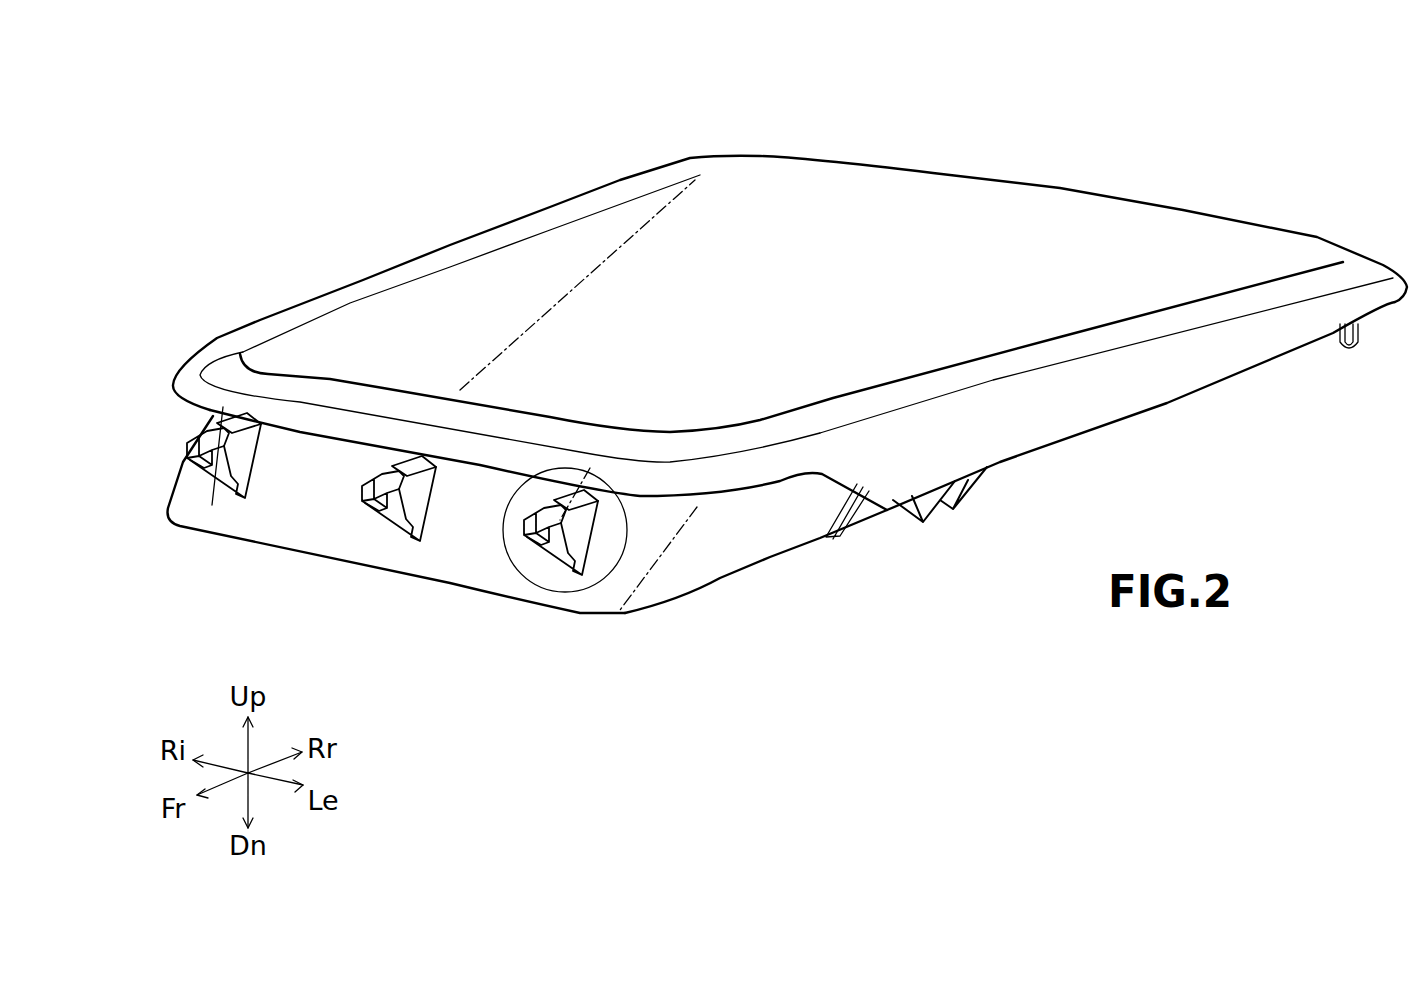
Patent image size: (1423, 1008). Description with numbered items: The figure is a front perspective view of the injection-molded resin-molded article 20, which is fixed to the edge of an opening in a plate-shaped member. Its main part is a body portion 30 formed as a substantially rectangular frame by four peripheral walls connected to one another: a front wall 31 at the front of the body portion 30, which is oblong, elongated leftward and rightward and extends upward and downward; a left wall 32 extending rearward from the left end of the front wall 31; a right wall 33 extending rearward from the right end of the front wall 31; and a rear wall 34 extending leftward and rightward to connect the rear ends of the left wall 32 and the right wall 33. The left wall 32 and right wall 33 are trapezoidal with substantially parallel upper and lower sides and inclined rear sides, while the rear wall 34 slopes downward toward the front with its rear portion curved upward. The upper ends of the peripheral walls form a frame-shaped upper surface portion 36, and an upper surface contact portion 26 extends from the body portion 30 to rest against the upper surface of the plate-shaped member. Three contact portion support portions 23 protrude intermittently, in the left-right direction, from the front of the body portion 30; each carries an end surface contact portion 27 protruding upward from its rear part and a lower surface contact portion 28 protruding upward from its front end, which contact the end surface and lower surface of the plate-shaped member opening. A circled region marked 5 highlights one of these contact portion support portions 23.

The resin-molded article 20 is at (296, 143).
The body portion 30 is at (626, 165).
The rear wall 34 is at (979, 236).
The upper surface portion 36 is at (368, 291).
The right wall 33 is at (412, 318).
The upper surface contact portion 26 is at (280, 410).
The front wall 31 is at (289, 527).
The left wall 32 is at (786, 533).
The end surface contact portion 27 is at (217, 428).
The lower surface contact portion 28 is at (184, 446).
The contact portion support portion 23 is at (233, 475).
The detail portion 5 is at (608, 573).